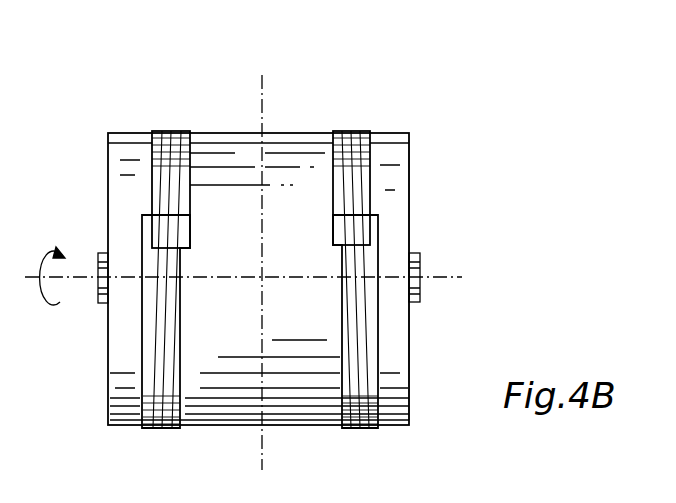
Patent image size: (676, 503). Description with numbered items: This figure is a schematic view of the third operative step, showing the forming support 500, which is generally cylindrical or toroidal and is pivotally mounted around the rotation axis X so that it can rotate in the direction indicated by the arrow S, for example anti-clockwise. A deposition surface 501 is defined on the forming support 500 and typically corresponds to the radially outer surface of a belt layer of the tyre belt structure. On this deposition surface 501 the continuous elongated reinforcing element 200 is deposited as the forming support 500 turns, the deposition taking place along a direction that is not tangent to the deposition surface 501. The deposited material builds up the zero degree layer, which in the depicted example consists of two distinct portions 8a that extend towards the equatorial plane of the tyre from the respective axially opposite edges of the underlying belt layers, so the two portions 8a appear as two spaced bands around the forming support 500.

The forming support 500 is at (437, 152).
The deposition surface 501 is at (398, 218).
The portions of the zero degree layer 8a is at (167, 120).
The continuous elongated reinforcing element 200 is at (190, 218).
The arrow indicating rotation direction S is at (40, 257).
The rotation axis X is at (61, 333).